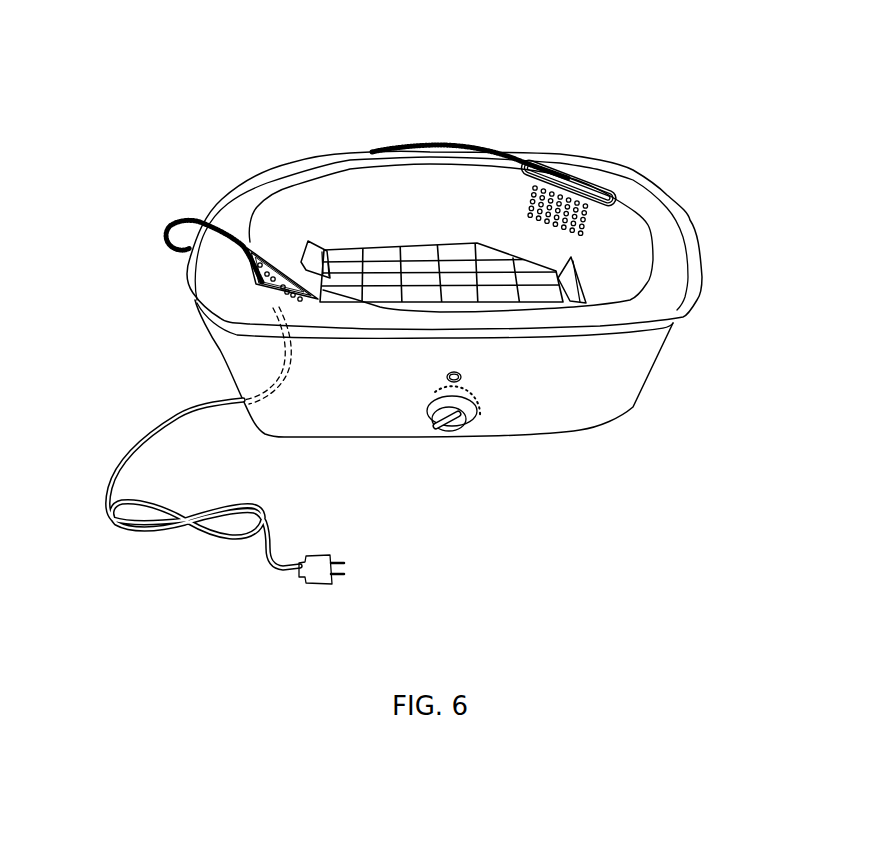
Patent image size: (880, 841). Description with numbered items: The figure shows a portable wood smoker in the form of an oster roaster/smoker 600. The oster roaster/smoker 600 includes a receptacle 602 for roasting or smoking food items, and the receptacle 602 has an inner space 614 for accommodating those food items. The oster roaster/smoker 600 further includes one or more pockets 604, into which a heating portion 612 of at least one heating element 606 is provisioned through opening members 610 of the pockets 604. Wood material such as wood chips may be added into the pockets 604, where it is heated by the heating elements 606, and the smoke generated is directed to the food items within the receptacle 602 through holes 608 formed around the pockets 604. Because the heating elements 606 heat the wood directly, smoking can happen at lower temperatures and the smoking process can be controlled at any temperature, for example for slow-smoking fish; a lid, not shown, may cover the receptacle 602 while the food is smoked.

The oster roaster/smoker 600 is at (224, 608).
The receptacle 602 is at (355, 178).
The pockets 604 is at (253, 278).
The heating element 606 is at (153, 231).
The holes 608 is at (588, 217).
The opening members 610 is at (252, 297).
The heating portion 612 is at (185, 219).
The inner space 614 is at (355, 265).